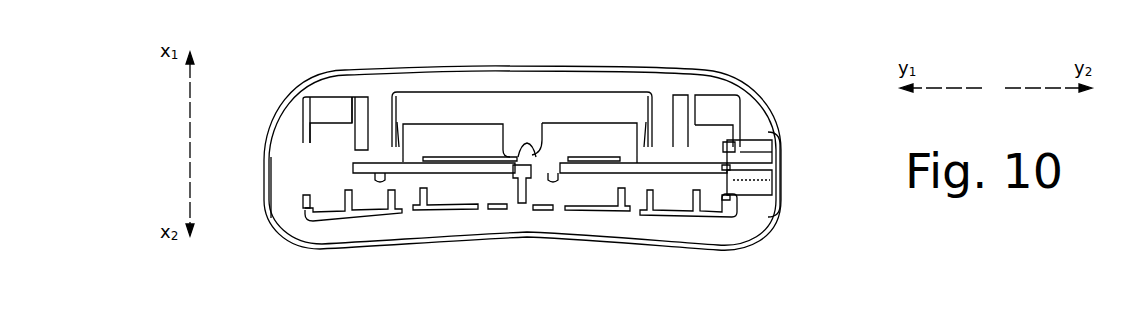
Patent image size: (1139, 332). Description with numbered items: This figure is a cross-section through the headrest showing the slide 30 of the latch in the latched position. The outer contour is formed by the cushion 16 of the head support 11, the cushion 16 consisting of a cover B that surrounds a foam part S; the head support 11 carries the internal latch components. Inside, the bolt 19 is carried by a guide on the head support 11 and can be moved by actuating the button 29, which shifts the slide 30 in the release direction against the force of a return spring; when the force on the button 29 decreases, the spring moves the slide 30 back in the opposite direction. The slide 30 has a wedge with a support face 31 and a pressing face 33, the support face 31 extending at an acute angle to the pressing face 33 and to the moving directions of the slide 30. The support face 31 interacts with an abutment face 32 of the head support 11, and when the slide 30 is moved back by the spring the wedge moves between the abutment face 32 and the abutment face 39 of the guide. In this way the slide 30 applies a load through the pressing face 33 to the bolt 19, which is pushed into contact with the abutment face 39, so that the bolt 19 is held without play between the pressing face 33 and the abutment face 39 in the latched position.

The head support 11 is at (358, 96).
The cushion 16 is at (745, 230).
The bolt 19 is at (566, 158).
The button 29 is at (762, 154).
The slide 30 is at (602, 170).
The support face 31 is at (515, 170).
The abutment face 32 is at (516, 163).
The pressing face 33 is at (523, 152).
The abutment face 39 is at (526, 163).
The foam part S is at (347, 232).
The cover B is at (286, 240).